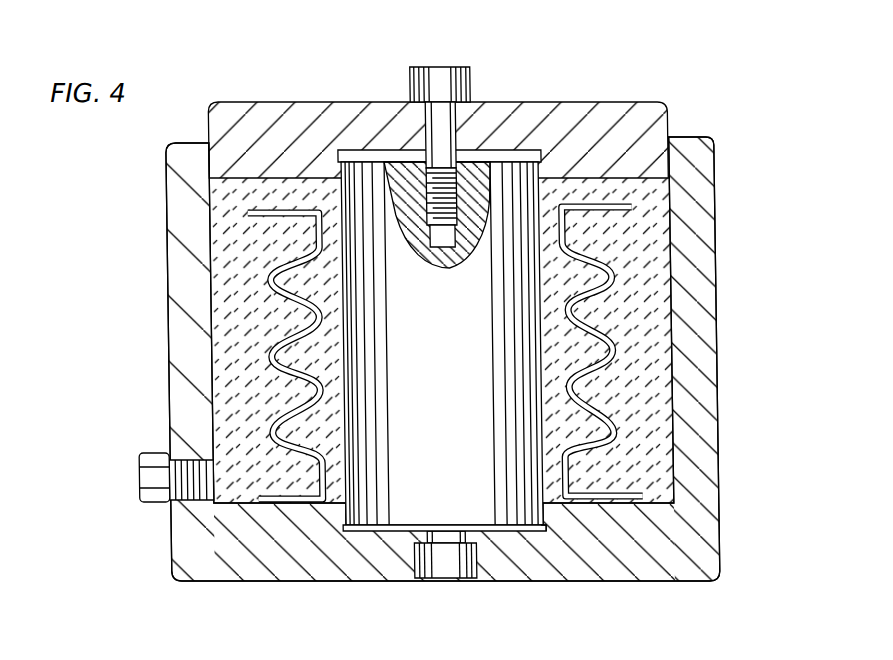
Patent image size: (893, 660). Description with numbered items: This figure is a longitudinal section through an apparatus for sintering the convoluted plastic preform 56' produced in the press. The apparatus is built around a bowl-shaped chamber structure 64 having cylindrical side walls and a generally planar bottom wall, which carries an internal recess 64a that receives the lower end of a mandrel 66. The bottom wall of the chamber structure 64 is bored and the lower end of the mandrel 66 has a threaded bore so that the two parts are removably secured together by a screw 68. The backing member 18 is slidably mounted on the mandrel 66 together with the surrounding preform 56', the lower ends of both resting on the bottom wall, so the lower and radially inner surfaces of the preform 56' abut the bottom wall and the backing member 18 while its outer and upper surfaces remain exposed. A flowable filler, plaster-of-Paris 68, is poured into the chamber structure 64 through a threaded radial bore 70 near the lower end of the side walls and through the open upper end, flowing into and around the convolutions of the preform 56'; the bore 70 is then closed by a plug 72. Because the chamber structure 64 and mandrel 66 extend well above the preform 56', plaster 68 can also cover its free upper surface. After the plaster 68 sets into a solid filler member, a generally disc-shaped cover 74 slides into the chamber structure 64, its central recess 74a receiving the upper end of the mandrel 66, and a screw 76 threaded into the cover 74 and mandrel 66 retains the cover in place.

The backing member 18 is at (590, 437).
The preform 56' is at (513, 353).
The chamber structure 64 is at (701, 208).
The internal recess 64a is at (505, 522).
The mandrel 66 is at (451, 336).
The plaster-of-Paris 68 is at (227, 293).
The threaded radial bore 70 is at (175, 447).
The plug 72 is at (150, 482).
The cover 74 is at (615, 100).
The central recess 74a is at (500, 148).
The screw 76 is at (440, 80).